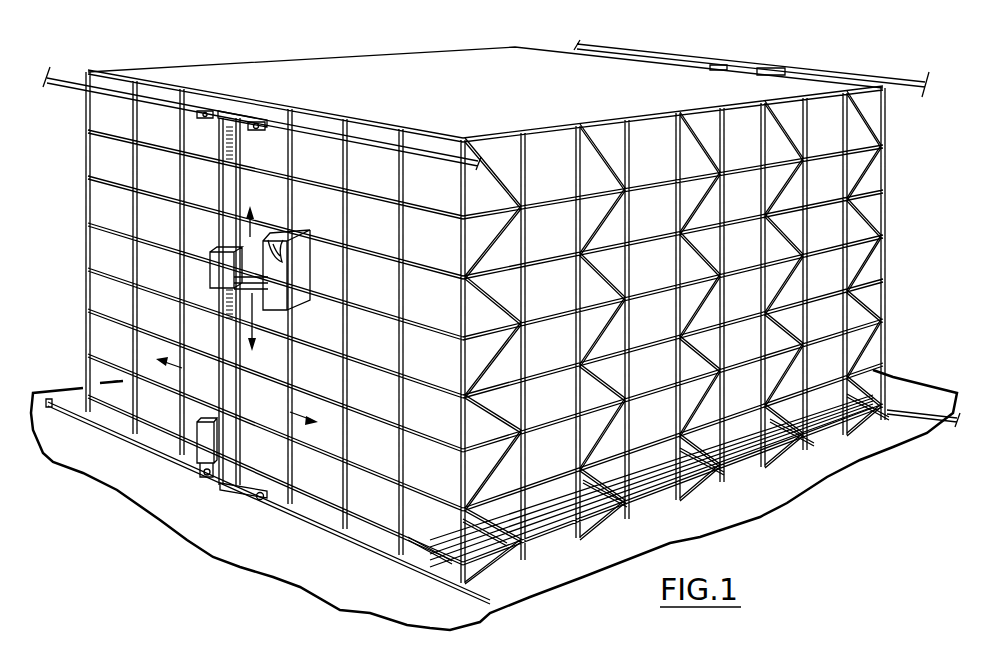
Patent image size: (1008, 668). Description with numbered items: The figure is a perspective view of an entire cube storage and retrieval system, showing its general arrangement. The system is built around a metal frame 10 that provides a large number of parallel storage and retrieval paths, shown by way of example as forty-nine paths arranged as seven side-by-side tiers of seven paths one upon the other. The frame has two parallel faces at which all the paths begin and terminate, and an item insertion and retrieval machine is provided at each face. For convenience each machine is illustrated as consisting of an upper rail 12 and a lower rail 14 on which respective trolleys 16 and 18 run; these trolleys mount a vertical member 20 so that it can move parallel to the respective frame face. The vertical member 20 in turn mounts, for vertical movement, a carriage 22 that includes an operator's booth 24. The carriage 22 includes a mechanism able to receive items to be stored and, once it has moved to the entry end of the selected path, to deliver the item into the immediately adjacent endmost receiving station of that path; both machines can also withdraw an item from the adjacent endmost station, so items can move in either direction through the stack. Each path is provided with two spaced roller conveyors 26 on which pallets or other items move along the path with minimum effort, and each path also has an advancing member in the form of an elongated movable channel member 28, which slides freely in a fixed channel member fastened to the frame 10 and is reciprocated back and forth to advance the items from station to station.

The metal frame 10 is at (885, 243).
The upper rail 12 is at (307, 127).
The lower rail 14 is at (310, 532).
The upper trolley 16 is at (240, 120).
The lower trolley 18 is at (237, 487).
The vertical member 20 is at (222, 328).
The carriage 22 is at (212, 255).
The operator's booth 24 is at (300, 278).
The roller conveyor 26 is at (423, 553).
The movable channel member 28 is at (647, 473).